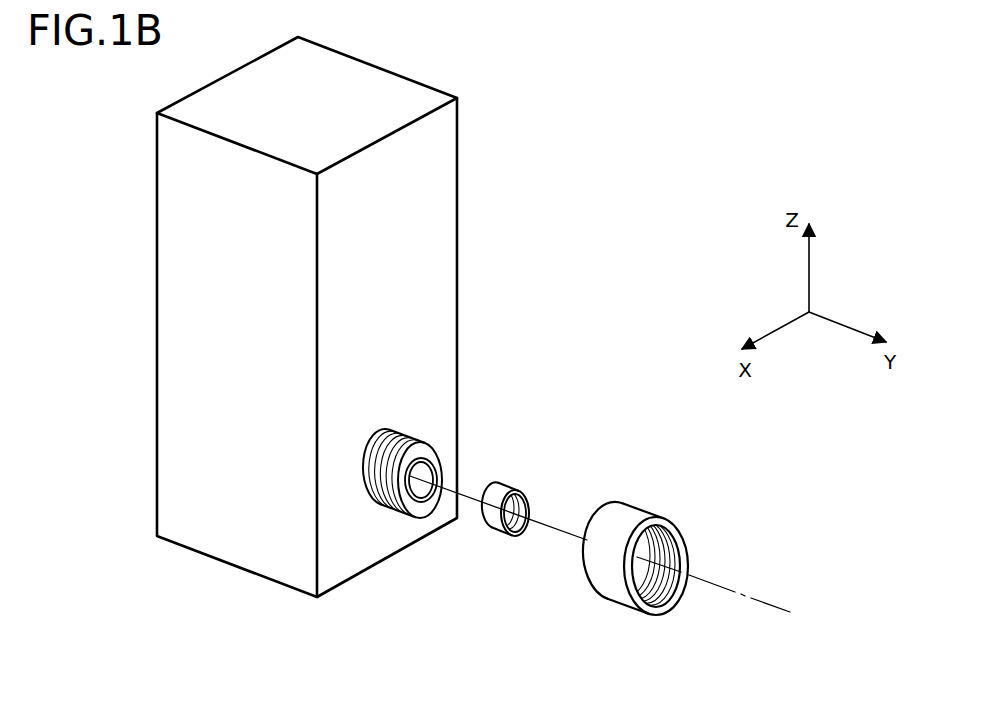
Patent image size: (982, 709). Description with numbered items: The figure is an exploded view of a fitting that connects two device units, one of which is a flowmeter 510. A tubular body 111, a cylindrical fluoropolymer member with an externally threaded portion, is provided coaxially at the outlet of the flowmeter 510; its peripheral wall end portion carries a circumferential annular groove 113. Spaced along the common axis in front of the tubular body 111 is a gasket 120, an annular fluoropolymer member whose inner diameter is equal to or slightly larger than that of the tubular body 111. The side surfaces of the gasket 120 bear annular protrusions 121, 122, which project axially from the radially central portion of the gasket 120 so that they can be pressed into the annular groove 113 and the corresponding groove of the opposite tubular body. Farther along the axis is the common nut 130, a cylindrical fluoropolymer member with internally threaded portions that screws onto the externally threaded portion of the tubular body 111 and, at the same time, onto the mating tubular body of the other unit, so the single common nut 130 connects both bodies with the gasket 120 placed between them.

The flowmeter 510 is at (332, 88).
The tubular body 111 is at (425, 440).
The annular groove 113 is at (418, 502).
The gasket 120 is at (542, 470).
The annular protrusion 121 is at (483, 518).
The annular protrusion 122 is at (530, 513).
The common nut 130 is at (637, 513).